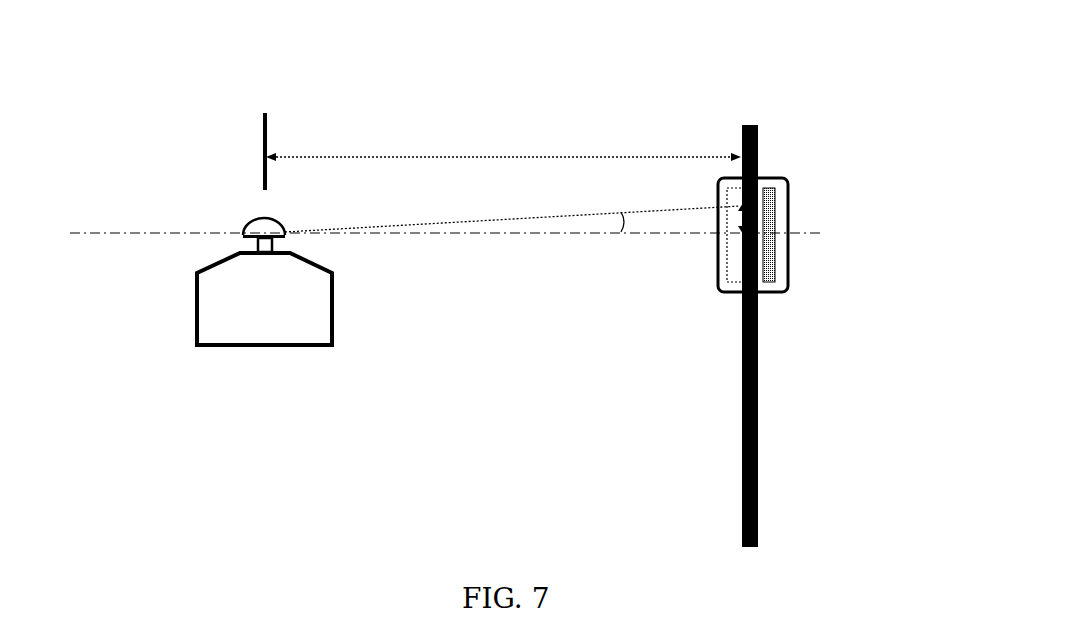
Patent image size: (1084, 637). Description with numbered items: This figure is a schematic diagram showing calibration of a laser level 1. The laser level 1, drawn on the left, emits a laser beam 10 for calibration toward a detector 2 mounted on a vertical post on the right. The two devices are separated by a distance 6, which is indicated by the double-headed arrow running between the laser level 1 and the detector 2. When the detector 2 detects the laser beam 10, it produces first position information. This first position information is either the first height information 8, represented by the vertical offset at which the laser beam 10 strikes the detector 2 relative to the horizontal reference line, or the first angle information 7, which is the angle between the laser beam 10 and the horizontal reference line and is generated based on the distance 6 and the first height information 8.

The laser level 1 is at (197, 275).
The detector 2 is at (788, 265).
The distance 6 is at (500, 157).
The first angle information 7 is at (622, 215).
The first height information 8 is at (737, 213).
The laser beam for calibration 10 is at (518, 220).